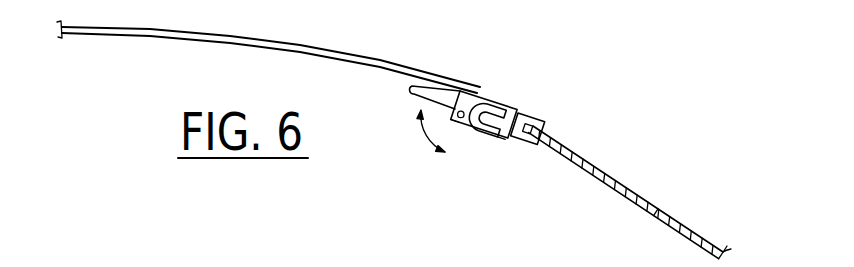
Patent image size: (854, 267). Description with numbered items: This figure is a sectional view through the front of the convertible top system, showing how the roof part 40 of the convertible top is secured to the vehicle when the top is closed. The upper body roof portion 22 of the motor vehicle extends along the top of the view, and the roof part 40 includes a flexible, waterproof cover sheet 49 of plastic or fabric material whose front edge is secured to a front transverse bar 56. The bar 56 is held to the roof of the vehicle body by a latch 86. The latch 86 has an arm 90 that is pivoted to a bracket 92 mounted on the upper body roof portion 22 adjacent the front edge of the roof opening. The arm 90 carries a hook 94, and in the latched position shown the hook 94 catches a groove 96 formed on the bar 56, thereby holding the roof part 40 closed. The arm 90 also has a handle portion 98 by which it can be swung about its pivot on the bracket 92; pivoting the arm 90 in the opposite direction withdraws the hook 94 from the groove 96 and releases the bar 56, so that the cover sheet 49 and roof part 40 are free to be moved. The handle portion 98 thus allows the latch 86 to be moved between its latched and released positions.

The upper body roof portion 22 is at (360, 52).
The roof part 40 is at (620, 168).
The cover sheet 49 is at (657, 203).
The front transverse bar 56 is at (535, 112).
The latch 86 is at (460, 147).
The arm 90 is at (478, 143).
The bracket 92 is at (465, 97).
The hook 94 is at (499, 140).
The groove 96 is at (497, 97).
The handle portion 98 is at (411, 86).